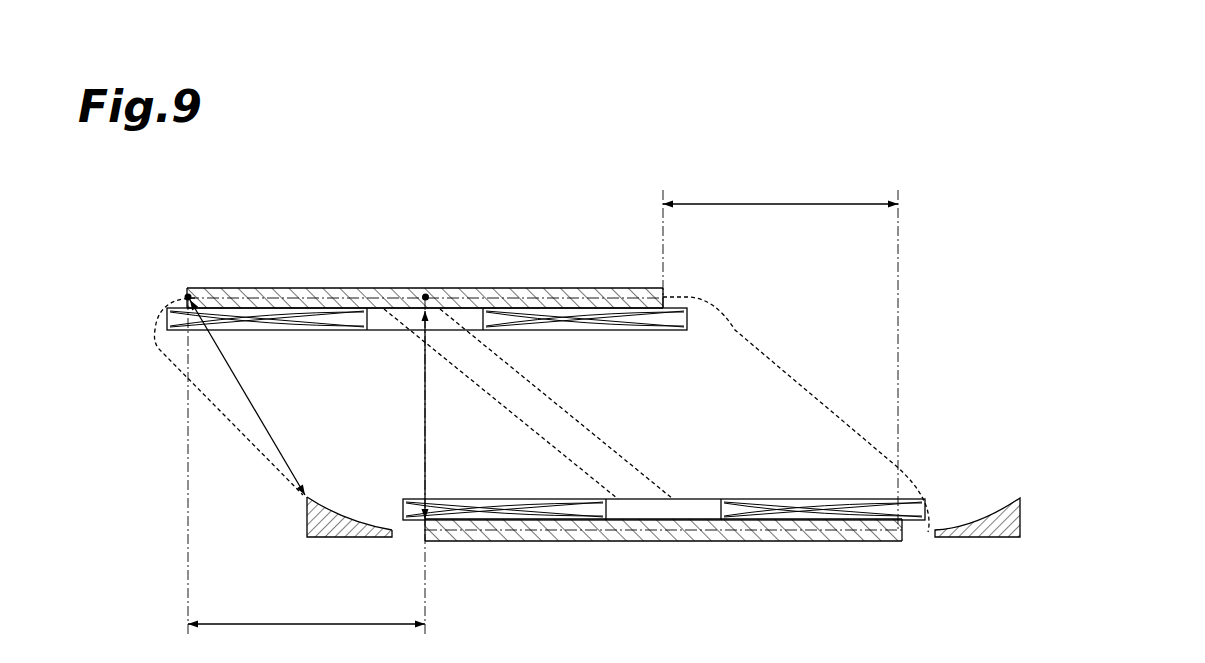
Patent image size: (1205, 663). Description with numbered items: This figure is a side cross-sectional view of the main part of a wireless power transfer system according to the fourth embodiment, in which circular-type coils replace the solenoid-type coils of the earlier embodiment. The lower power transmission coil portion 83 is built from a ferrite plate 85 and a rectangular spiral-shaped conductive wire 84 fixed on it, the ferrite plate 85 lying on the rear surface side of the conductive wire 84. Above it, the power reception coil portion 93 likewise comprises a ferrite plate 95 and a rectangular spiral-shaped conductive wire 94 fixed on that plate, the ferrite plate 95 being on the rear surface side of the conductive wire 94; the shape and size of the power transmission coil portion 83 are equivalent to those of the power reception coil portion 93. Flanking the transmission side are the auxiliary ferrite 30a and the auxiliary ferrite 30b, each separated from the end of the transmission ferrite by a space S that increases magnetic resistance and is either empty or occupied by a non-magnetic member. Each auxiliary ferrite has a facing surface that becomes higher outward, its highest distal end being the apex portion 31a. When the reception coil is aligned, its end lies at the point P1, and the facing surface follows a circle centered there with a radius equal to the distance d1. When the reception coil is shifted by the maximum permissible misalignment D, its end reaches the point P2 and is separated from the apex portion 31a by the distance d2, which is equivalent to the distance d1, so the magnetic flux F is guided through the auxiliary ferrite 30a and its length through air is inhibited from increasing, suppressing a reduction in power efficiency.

The power reception coil portion 93 is at (425, 244).
The conductive wire 94 is at (569, 289).
The ferrite plate 95 is at (582, 215).
The power transmission coil portion 83 is at (663, 590).
The conductive wire 84 is at (546, 544).
The ferrite plate 85 is at (542, 615).
The auxiliary ferrite 30a is at (326, 521).
The auxiliary ferrite 30b is at (1022, 517).
The apex portion 31a is at (311, 492).
The magnetic flux F is at (168, 358).
The space S is at (406, 540).
The point P1 is at (425, 293).
The second point on heater P2 is at (188, 293).
The maximum permissible misalignment D is at (543, 416).
The distance d1 is at (439, 415).
The distance d2 is at (247, 397).